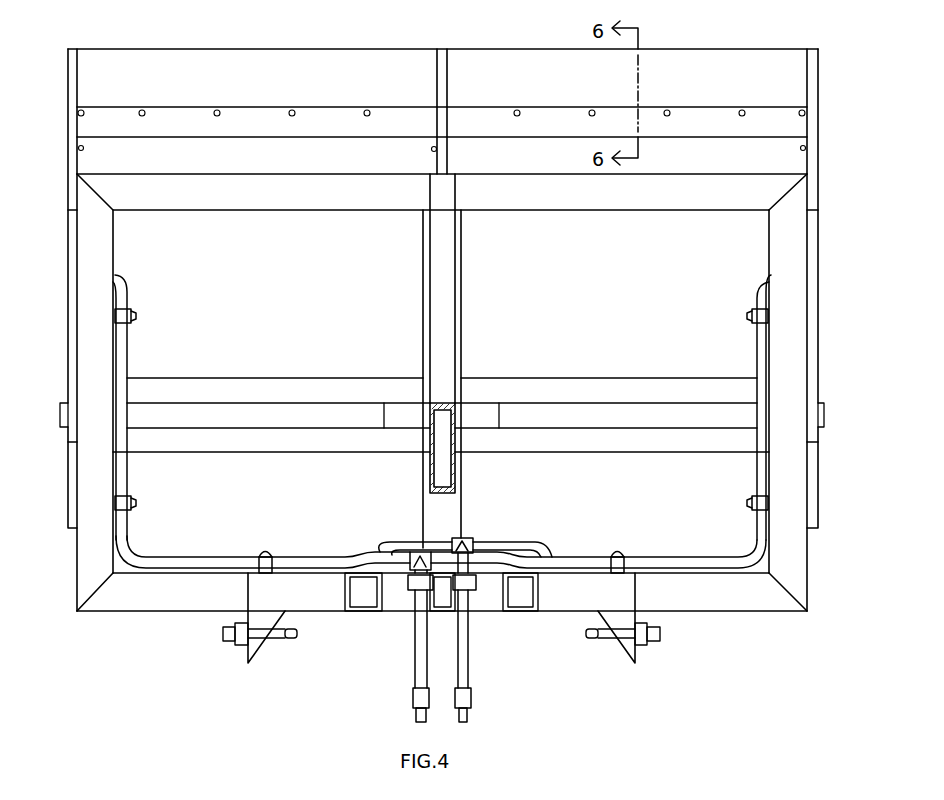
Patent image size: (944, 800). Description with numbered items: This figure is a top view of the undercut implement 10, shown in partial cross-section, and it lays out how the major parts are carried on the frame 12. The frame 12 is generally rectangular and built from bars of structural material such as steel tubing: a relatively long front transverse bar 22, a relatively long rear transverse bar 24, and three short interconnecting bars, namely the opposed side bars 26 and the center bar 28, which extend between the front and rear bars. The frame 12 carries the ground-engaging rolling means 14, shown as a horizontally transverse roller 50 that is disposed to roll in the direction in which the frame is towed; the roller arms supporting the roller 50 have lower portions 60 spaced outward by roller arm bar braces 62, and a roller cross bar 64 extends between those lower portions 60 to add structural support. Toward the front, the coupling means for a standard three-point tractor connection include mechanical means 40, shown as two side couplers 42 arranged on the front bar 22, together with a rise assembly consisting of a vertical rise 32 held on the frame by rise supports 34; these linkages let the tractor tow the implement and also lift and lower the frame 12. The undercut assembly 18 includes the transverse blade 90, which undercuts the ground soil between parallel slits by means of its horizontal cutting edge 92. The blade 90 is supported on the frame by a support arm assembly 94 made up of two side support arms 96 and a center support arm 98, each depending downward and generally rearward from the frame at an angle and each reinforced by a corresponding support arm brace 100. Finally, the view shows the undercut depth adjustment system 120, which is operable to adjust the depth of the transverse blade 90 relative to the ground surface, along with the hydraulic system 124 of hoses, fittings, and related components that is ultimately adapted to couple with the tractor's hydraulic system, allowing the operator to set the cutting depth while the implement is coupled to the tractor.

The implement 10 is at (205, 680).
The frame 12 is at (145, 632).
The ground-engaging rolling means 14 is at (537, 350).
The undercut assembly 18 is at (58, 72).
The front transverse bar 22 is at (184, 601).
The rear transverse bar 24 is at (274, 205).
The side bars 26 is at (104, 265).
The center bar 28 is at (423, 290).
The vertical rise 32 is at (441, 612).
The rise supports 34 is at (457, 316).
The mechanical means 40 is at (262, 665).
The side couplers 42 is at (270, 646).
The roller 50 is at (608, 378).
The lower portions 60 is at (60, 410).
The roller arm bar braces 62 is at (255, 403).
The roller cross bar 64 is at (403, 403).
The transverse blade 90 is at (718, 88).
The horizontal cutting edge 92 is at (672, 138).
The support arm assembly 94 is at (838, 86).
The side support arms 96 is at (818, 317).
The center support arm 98 is at (437, 70).
The support arm brace 100 is at (818, 190).
The undercut depth adjustment system 120 is at (471, 527).
The hydraulic system 124 is at (515, 537).